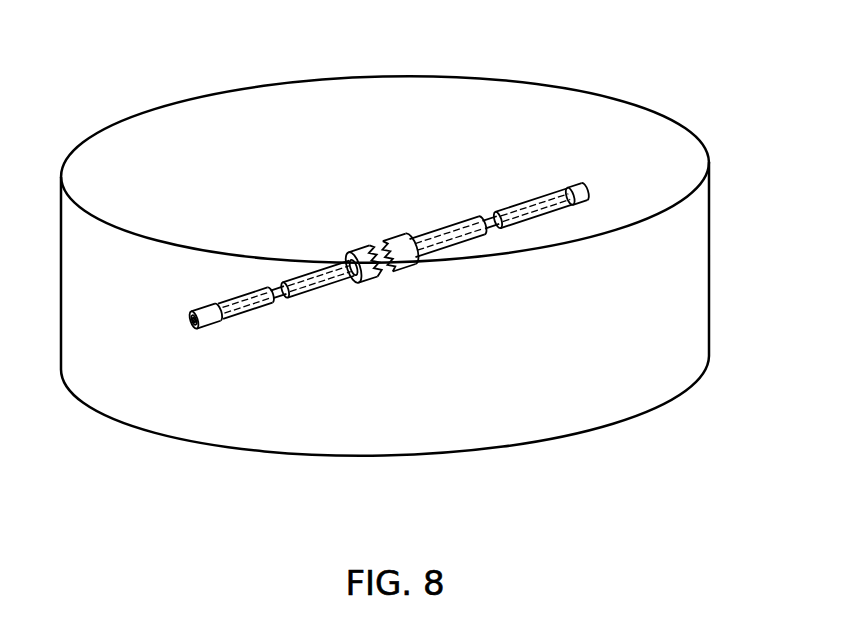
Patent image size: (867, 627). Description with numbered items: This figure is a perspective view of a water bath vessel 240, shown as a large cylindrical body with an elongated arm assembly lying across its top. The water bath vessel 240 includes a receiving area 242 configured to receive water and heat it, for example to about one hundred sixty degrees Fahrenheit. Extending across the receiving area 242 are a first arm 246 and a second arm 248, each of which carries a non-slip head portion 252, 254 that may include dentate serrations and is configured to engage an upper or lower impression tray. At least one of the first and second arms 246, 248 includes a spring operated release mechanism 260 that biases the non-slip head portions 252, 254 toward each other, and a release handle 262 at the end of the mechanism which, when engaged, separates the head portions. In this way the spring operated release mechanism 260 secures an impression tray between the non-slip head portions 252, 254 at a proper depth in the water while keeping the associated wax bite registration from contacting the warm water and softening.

The water bath vessel 240 is at (658, 112).
The receiving area 242 is at (675, 162).
The first arm 246 is at (316, 298).
The second arm 248 is at (463, 217).
The non-slip head portion 252 is at (360, 248).
The non-slip head portion 254 is at (403, 234).
The spring operated release mechanism 260 is at (238, 295).
The release handle 262 is at (203, 332).